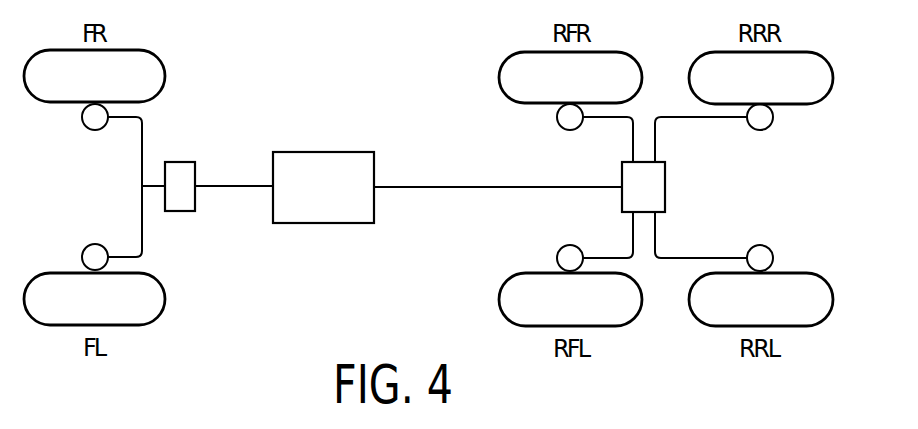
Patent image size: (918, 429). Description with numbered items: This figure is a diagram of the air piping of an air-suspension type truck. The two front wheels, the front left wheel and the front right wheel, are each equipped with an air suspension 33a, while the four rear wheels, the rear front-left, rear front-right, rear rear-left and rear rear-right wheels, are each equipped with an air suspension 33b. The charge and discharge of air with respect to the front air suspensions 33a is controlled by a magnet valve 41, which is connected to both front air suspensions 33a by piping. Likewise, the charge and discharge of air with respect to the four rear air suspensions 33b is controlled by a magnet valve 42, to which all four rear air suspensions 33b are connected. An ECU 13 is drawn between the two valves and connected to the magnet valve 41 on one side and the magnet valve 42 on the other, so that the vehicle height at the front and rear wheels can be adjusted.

The ECU 13 is at (340, 152).
The air suspensions 33a is at (82, 119).
The air suspensions 33b is at (553, 118).
The magnet valve 41 is at (183, 162).
The magnet valve 42 is at (622, 173).